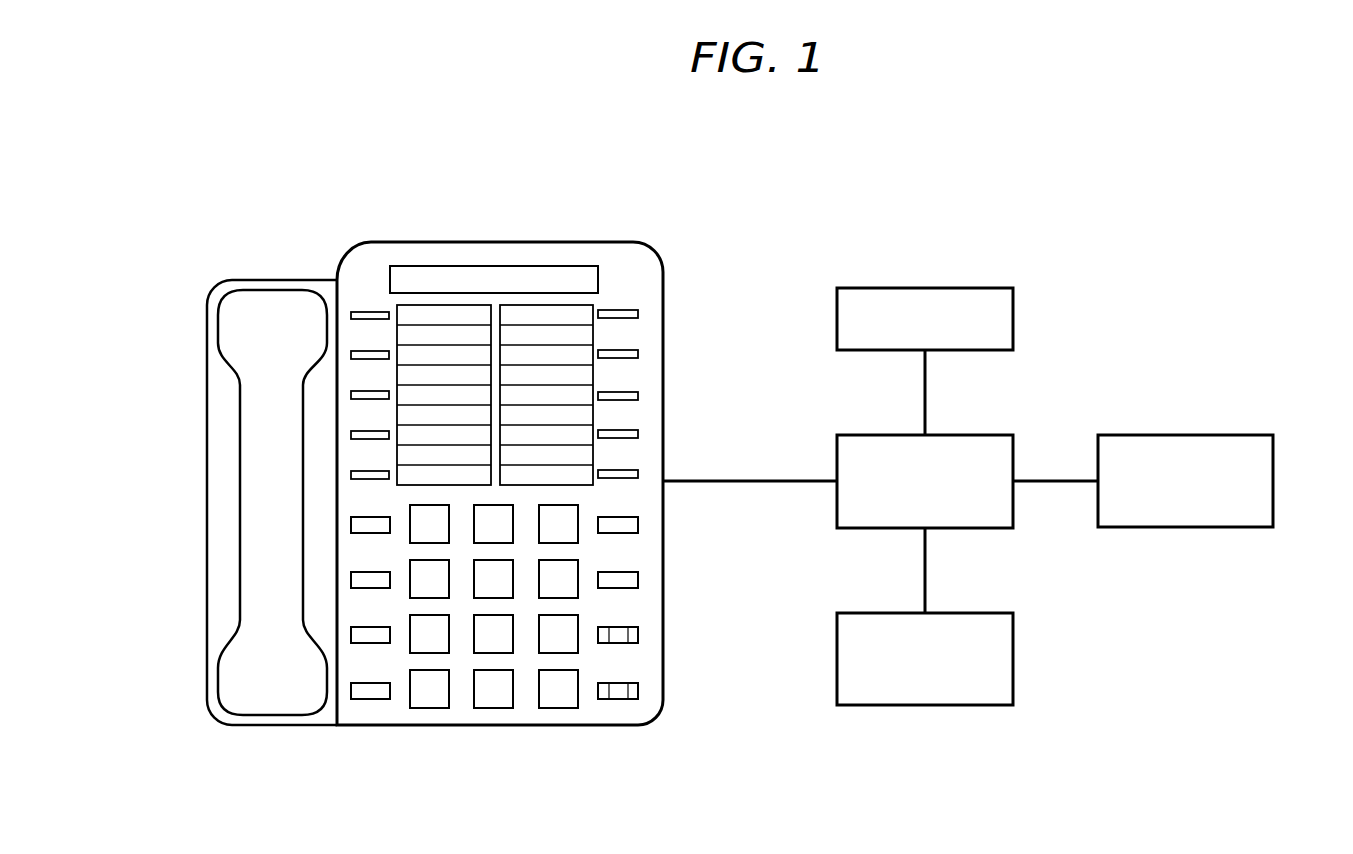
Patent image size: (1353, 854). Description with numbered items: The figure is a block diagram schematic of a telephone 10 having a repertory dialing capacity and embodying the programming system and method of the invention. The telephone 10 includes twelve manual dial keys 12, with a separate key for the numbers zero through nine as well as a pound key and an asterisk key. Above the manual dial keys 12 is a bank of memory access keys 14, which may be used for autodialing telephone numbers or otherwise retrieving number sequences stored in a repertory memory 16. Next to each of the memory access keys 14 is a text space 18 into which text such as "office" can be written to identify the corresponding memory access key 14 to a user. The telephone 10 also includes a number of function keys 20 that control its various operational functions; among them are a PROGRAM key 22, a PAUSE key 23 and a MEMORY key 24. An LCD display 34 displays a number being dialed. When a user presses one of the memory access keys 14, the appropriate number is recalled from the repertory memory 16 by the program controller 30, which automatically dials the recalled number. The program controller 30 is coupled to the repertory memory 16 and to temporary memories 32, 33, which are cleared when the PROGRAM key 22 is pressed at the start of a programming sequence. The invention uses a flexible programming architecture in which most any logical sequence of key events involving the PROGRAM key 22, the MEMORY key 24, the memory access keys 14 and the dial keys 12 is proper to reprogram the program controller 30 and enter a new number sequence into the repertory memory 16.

The telephone 10 is at (599, 192).
The manual dial keys 12 is at (538, 657).
The memory access keys 14 is at (365, 350).
The repertory memory 16 is at (1015, 322).
The text space 18 is at (540, 313).
The function keys 20 is at (640, 578).
The PROGRAM key 22 is at (640, 633).
The PAUSE key 23 is at (369, 690).
The MEMORY key 24 is at (640, 698).
The program controller 30 is at (1015, 460).
The temporary memory 32 is at (1275, 470).
The temporary memory 33 is at (1015, 649).
The LCD display 34 is at (587, 277).